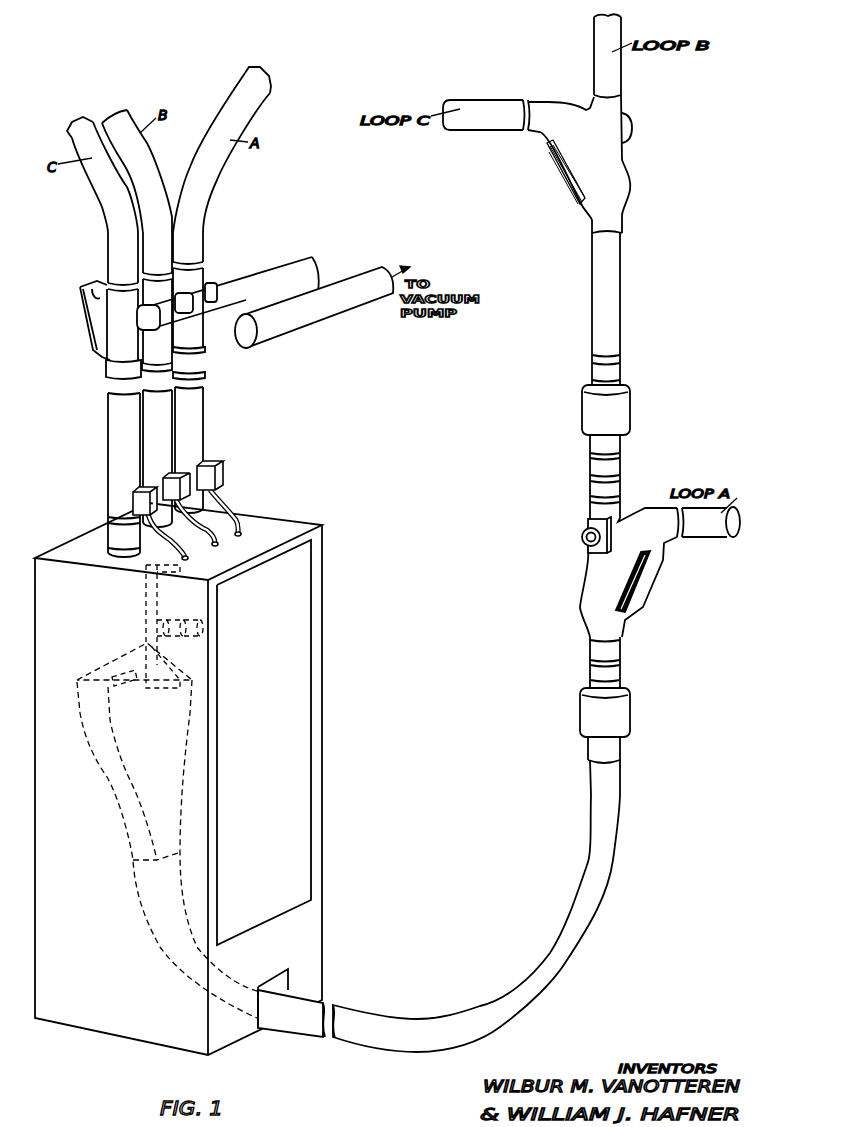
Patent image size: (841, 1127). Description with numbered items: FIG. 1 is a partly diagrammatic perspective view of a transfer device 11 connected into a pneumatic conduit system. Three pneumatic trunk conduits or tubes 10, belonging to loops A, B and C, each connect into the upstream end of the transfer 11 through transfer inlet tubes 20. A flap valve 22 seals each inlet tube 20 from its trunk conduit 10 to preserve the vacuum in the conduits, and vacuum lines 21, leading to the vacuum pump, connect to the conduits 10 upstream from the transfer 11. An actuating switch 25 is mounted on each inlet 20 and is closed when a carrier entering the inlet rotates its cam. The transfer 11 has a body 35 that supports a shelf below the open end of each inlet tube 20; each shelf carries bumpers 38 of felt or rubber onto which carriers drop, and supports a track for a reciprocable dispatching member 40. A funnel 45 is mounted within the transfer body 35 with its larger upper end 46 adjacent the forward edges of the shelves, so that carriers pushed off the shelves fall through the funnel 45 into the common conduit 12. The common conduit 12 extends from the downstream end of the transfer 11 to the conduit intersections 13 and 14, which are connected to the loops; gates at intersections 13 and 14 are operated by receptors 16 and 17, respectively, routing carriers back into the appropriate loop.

The pneumatic trunk conduit 10 is at (130, 236).
The transfer device 11 is at (330, 691).
The common conduit 12 is at (547, 928).
The conduit intersection 13 is at (578, 583).
The conduit intersection 14 is at (541, 179).
The receptor 16 is at (584, 707).
The receptor 17 is at (586, 408).
The transfer inlet tube 20 is at (134, 431).
The vacuum line 21 is at (248, 293).
The flap valve 22 is at (95, 322).
The actuating switch 25 is at (177, 477).
The transfer body 35 is at (320, 642).
The bumper 38 is at (127, 687).
The reciprocable dispatching member 40 is at (157, 607).
The funnel 45 is at (107, 789).
The larger upper end of funnel 46 is at (100, 666).